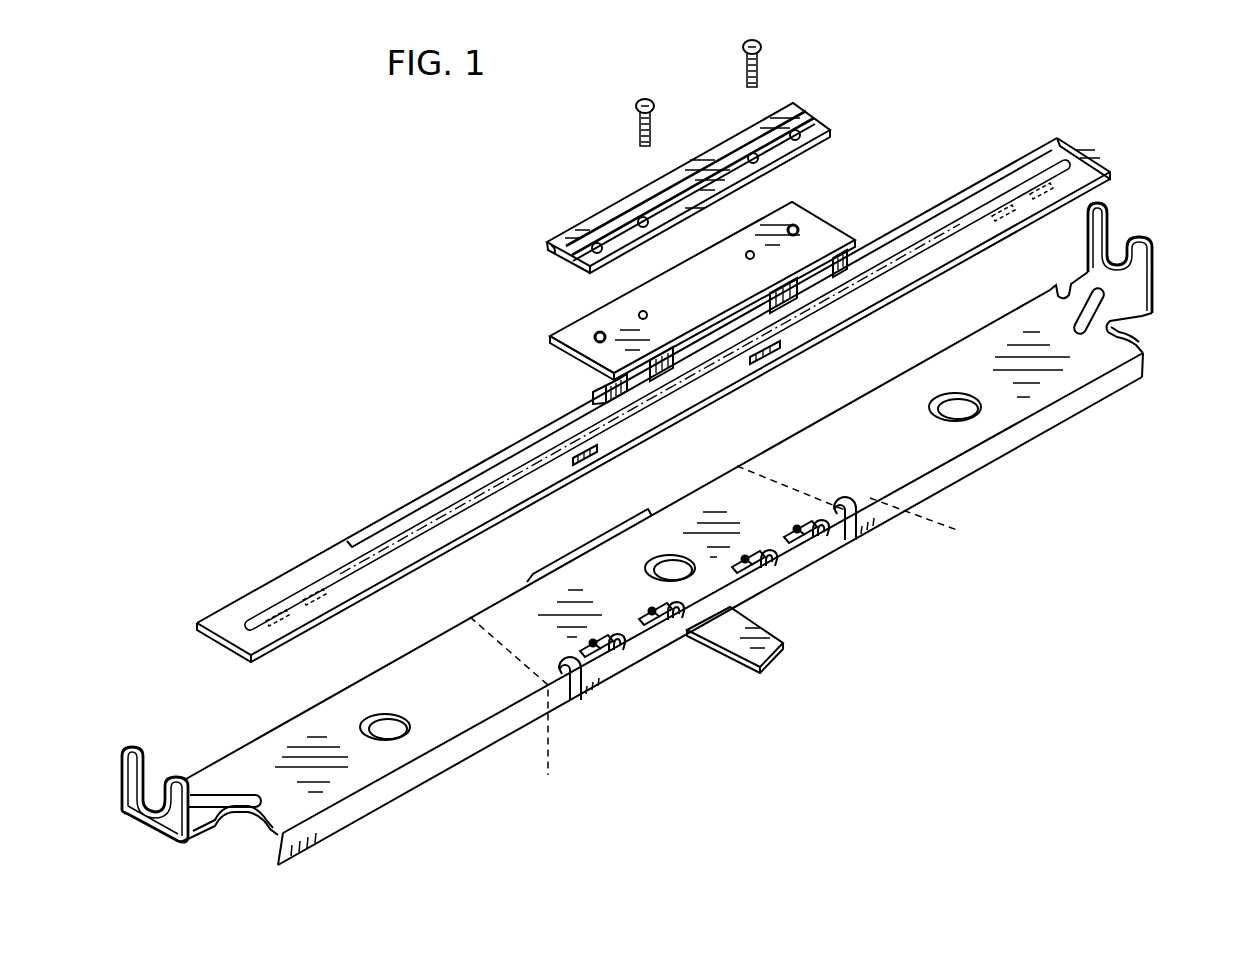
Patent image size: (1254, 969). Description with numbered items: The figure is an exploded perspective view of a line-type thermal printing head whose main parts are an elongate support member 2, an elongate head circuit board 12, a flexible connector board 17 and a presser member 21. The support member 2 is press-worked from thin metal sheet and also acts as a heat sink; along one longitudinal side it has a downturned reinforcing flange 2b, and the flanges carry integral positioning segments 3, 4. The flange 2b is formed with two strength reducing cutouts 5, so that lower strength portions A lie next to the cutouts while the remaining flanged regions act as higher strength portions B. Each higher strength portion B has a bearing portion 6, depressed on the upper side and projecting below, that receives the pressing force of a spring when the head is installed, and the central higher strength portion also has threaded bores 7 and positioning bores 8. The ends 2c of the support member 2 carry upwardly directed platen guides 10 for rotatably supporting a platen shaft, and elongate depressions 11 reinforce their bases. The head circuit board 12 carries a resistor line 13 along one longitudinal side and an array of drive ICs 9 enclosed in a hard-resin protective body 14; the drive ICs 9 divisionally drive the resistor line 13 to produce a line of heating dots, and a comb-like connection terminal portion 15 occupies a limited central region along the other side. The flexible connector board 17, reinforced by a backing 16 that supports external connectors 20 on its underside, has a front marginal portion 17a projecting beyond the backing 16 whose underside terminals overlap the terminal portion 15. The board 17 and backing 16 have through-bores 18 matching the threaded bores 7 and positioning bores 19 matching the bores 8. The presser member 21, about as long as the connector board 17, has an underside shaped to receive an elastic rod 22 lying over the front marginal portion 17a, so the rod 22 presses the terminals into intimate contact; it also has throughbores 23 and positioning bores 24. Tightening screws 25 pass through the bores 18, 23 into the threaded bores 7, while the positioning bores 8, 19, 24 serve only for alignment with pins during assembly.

The support member 2 is at (430, 640).
The reinforcing flange 2b is at (373, 800).
The support member end 2c is at (257, 833).
The positioning segment 3 is at (560, 556).
The positioning segment 4 is at (782, 643).
The strength reducing cutout 5 is at (572, 702).
The bearing portion 6 is at (383, 723).
The threaded bore 7 is at (672, 643).
The positioning bore 8 is at (617, 667).
The drive IC 9 is at (310, 598).
The platen guide 10 is at (130, 747).
The elongate depression 11 is at (210, 833).
The head circuit board 12 is at (252, 592).
The resistor line 13 is at (407, 508).
The protective body 14 is at (1073, 150).
The comb-like connection terminal portion 15 is at (708, 418).
The reinforcing backing 16 is at (567, 350).
The flexible connector board 17 is at (713, 270).
The front marginal portion 17a is at (550, 327).
The through-bore 18 is at (647, 315).
The positioning bore 19 is at (600, 337).
The connector 20 is at (592, 385).
The presser member 21 is at (727, 143).
The elastic rod 22 is at (548, 243).
The throughbore 23 is at (643, 222).
The positioning bore 24 is at (597, 248).
The tightening screw 25 is at (638, 103).
The lower strength portion A is at (726, 633).
The higher strength portion B is at (432, 728).